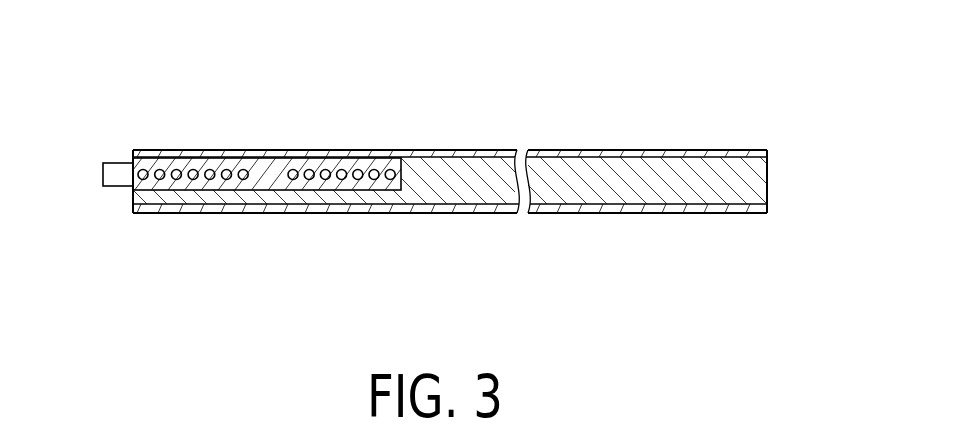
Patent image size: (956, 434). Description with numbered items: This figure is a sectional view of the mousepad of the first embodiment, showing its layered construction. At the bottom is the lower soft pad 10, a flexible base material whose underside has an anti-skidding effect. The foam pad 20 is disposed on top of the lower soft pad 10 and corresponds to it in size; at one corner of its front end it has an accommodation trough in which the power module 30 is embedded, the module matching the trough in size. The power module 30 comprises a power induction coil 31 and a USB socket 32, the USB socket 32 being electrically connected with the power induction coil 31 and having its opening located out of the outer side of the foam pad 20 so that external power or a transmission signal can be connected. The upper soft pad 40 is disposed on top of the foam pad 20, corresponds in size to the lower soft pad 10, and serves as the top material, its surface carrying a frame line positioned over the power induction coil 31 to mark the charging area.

The lower soft pad 10 is at (635, 213).
The foam pad 20 is at (578, 157).
The power module 30 is at (256, 114).
The power induction coil 31 is at (193, 170).
The USB socket 32 is at (115, 163).
The upper soft pad 40 is at (672, 149).